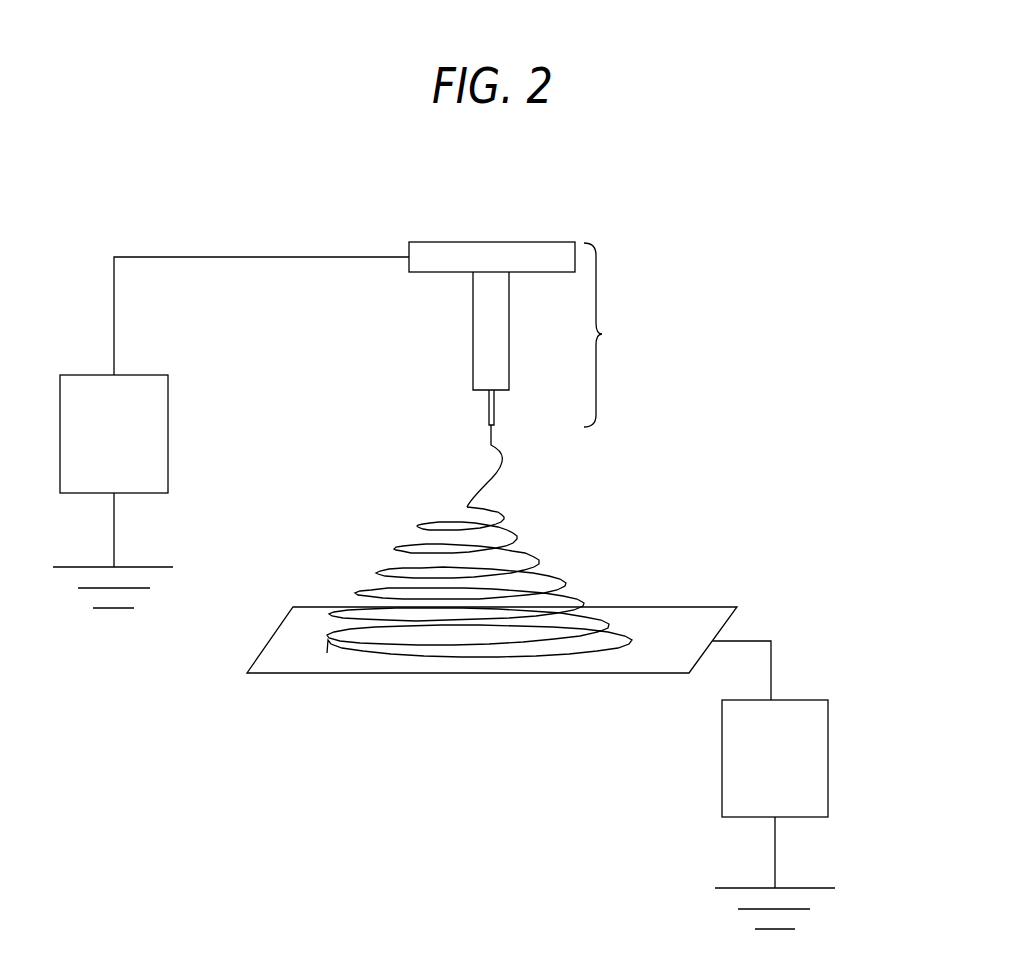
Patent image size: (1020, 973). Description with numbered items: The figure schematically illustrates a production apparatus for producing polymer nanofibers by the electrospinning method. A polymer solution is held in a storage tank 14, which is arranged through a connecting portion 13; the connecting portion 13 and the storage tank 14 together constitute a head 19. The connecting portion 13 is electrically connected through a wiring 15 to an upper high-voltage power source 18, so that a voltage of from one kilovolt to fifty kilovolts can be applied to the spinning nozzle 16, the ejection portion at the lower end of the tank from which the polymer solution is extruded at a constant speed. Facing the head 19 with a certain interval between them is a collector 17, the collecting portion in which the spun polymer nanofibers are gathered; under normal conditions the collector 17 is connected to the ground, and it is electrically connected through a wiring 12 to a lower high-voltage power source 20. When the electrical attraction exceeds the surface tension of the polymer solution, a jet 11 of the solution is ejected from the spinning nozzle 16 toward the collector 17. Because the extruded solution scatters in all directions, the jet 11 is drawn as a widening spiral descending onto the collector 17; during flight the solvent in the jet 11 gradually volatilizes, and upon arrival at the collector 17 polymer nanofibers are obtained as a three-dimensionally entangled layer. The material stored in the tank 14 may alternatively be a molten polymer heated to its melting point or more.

The jet 11 is at (486, 468).
The wiring 12 is at (742, 641).
The connecting portion 13 is at (508, 242).
The storage tank 14 is at (509, 360).
The wiring 15 is at (238, 257).
The spinning nozzle 16 is at (494, 402).
The collector 17 is at (640, 607).
The high-voltage power source 18 is at (168, 448).
The head 19 is at (608, 335).
The high-voltage power source 20 is at (828, 773).